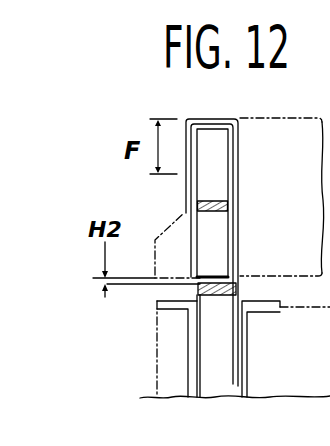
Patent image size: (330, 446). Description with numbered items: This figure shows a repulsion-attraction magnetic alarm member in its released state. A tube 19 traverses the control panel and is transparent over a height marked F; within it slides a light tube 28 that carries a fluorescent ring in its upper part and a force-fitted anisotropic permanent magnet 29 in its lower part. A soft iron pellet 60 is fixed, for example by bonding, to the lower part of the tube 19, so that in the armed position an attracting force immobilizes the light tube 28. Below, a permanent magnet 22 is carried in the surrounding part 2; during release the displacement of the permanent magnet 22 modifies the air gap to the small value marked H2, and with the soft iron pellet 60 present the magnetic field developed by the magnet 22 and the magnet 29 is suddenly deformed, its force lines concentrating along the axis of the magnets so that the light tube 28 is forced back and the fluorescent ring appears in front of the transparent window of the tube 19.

The base frame 2 is at (170, 340).
The tube 19 is at (237, 153).
The permanent magnet 22 is at (214, 292).
The light tube 28 is at (222, 170).
The anisotropic permanent magnet 29 is at (228, 205).
The soft iron pellet 60 is at (231, 282).